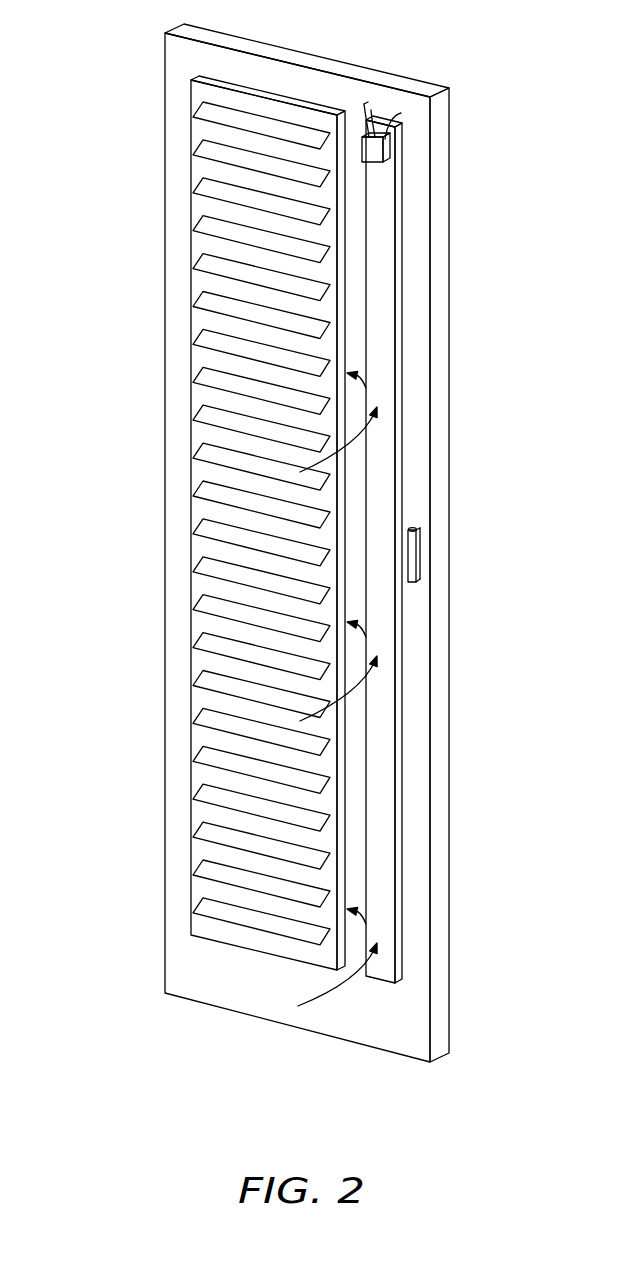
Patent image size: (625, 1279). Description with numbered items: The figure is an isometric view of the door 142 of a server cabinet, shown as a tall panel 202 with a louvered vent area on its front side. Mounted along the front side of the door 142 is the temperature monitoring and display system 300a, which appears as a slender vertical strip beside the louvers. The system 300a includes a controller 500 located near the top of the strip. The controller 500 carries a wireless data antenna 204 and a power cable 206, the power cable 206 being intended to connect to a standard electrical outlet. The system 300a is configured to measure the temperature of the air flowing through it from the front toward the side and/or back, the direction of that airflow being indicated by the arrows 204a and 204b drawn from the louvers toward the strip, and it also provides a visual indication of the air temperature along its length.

The door panel 202 is at (170, 57).
The door 142 is at (300, 46).
The power cable 206 is at (372, 105).
The wireless data antenna 204 is at (401, 113).
The controller 500 is at (390, 150).
The temperature monitoring and display system 300a is at (397, 250).
The arrows 204b is at (372, 427).
The arrows 204a is at (373, 957).